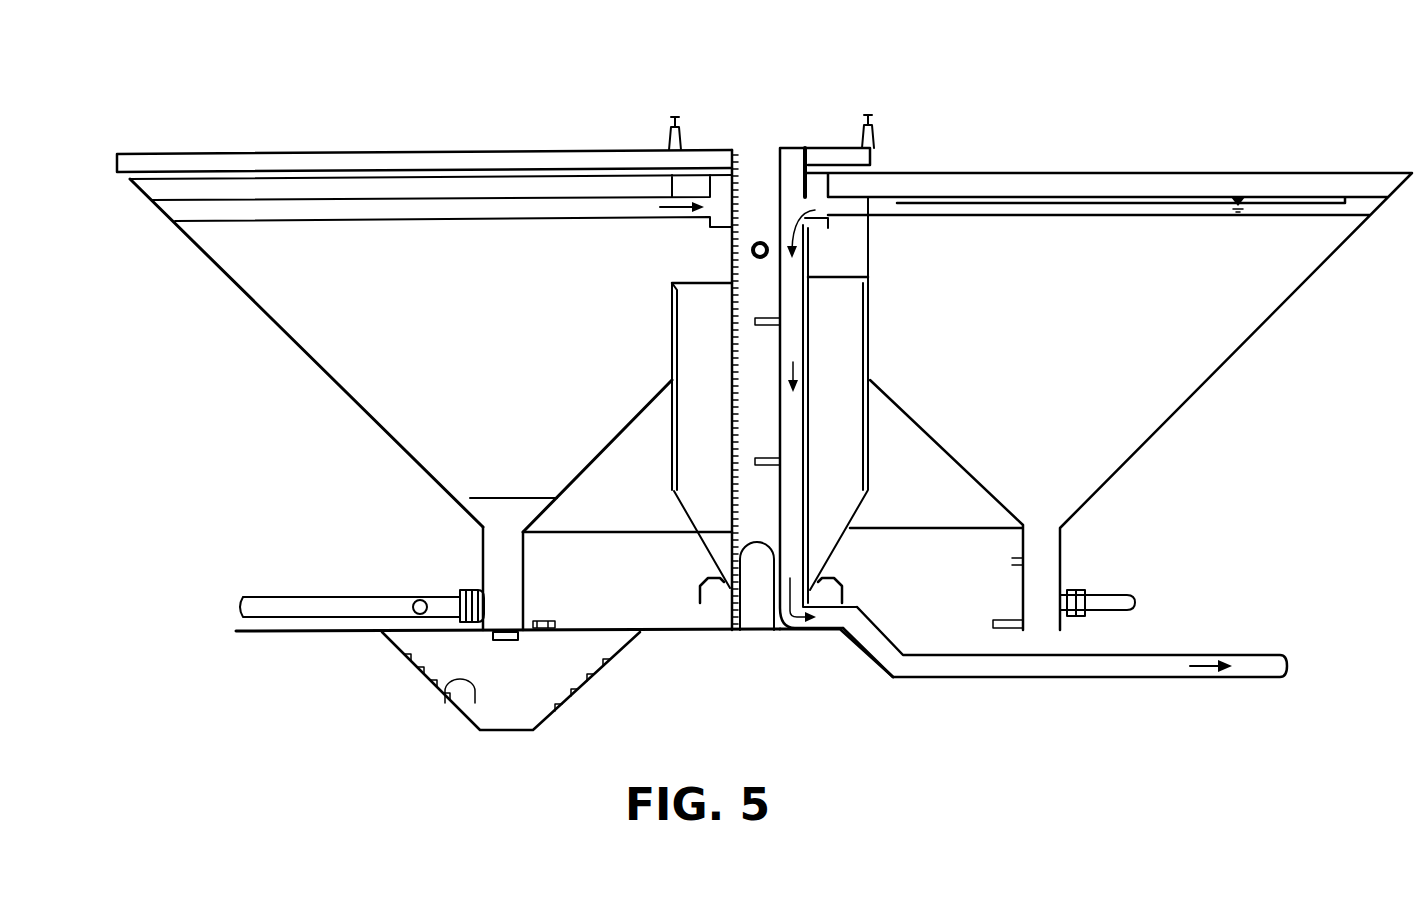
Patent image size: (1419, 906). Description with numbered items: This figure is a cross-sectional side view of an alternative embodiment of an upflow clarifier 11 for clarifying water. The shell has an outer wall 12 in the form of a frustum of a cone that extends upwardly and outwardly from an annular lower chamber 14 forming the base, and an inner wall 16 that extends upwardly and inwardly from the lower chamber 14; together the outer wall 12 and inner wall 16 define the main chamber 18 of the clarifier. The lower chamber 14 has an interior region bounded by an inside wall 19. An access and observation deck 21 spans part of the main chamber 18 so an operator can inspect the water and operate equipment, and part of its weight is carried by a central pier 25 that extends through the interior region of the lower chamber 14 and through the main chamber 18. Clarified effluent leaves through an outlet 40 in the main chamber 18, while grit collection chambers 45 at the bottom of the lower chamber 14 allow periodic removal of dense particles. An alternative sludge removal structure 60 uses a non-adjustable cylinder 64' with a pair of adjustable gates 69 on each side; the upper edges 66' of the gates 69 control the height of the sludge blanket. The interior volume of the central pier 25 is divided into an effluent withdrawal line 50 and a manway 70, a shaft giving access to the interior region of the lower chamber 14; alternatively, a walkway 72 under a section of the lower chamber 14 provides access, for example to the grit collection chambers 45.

The clarifier 11 is at (300, 305).
The outer wall 12 is at (1205, 350).
The lower chamber 14 is at (513, 584).
The inner wall 16 is at (470, 499).
The main chamber 18 is at (466, 321).
The inside wall 19 is at (1000, 560).
The access and observation deck 21 is at (244, 164).
The central pier 25 is at (730, 255).
The outlet 40 is at (324, 216).
The grit collection chamber 45 is at (495, 640).
The effluent withdrawal line 50 is at (793, 548).
The sludge removal structure 60 is at (665, 292).
The non-adjustable cylinder 64' is at (919, 354).
The upper edge 66' is at (851, 348).
The adjustable gate 69 is at (672, 285).
The manway 70 is at (755, 515).
The walkway 72 is at (457, 702).